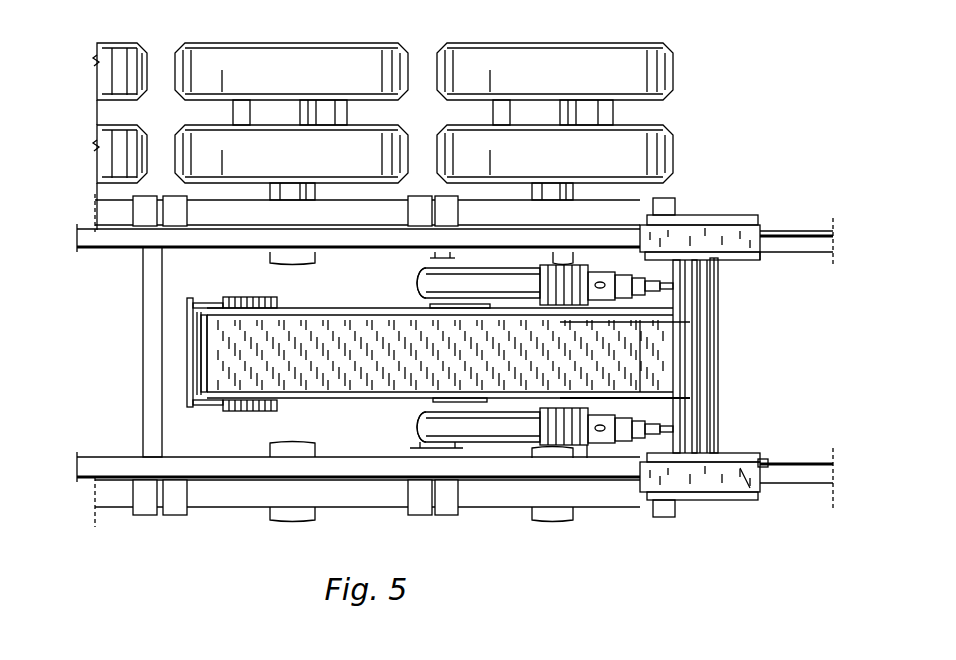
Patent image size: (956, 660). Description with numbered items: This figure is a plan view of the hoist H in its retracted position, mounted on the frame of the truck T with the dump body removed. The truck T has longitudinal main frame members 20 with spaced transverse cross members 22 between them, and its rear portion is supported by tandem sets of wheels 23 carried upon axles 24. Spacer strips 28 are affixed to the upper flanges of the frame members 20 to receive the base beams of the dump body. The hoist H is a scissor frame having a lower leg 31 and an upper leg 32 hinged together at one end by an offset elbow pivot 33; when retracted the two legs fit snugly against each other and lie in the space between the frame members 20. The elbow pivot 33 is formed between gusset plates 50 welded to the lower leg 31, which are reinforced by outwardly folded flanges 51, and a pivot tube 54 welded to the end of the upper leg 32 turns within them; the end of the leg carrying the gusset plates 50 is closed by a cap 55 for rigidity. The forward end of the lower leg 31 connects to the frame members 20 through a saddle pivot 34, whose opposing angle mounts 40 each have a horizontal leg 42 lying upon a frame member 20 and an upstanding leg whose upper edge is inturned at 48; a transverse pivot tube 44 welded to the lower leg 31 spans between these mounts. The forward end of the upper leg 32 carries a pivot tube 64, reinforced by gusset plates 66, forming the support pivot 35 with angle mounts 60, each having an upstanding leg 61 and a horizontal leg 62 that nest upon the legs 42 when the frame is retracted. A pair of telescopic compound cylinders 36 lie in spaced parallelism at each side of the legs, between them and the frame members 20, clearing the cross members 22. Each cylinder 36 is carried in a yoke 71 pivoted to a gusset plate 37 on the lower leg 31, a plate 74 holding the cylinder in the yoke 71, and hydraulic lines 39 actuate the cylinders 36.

The longitudinal main frame members 20 is at (100, 250).
The transverse cross members 22 is at (148, 278).
The wheels 23 is at (190, 55).
The axles 24 is at (293, 188).
The spacer strips 28 is at (108, 467).
The lower leg 31 is at (357, 307).
The upper leg 32 is at (405, 332).
The elbow pivot 33 is at (180, 342).
The saddle pivot 34 is at (718, 398).
The support pivot 35 is at (720, 330).
The telescopic compound cylinders 36 is at (427, 283).
The gusset plate 37 is at (482, 305).
The hydraulic lines 39 is at (598, 285).
The angle mounts 40 is at (767, 220).
The horizontal leg 42 is at (718, 220).
The pivot tube 44 is at (715, 307).
The inturned upper edge 48 is at (757, 258).
The gusset plates 50 is at (207, 277).
The flanges 51 is at (262, 297).
The pivot tube 54 is at (203, 352).
The cap 55 is at (185, 370).
The angle mounts 60 is at (740, 225).
The upstanding leg 61 is at (763, 465).
The horizontal leg 62 is at (740, 480).
The pivot tube 64 is at (695, 360).
The gusset plates 66 is at (640, 393).
The yoke 71 is at (560, 283).
The plate 74 is at (587, 458).
The truck T is at (688, 150).
The hoist H is at (757, 358).